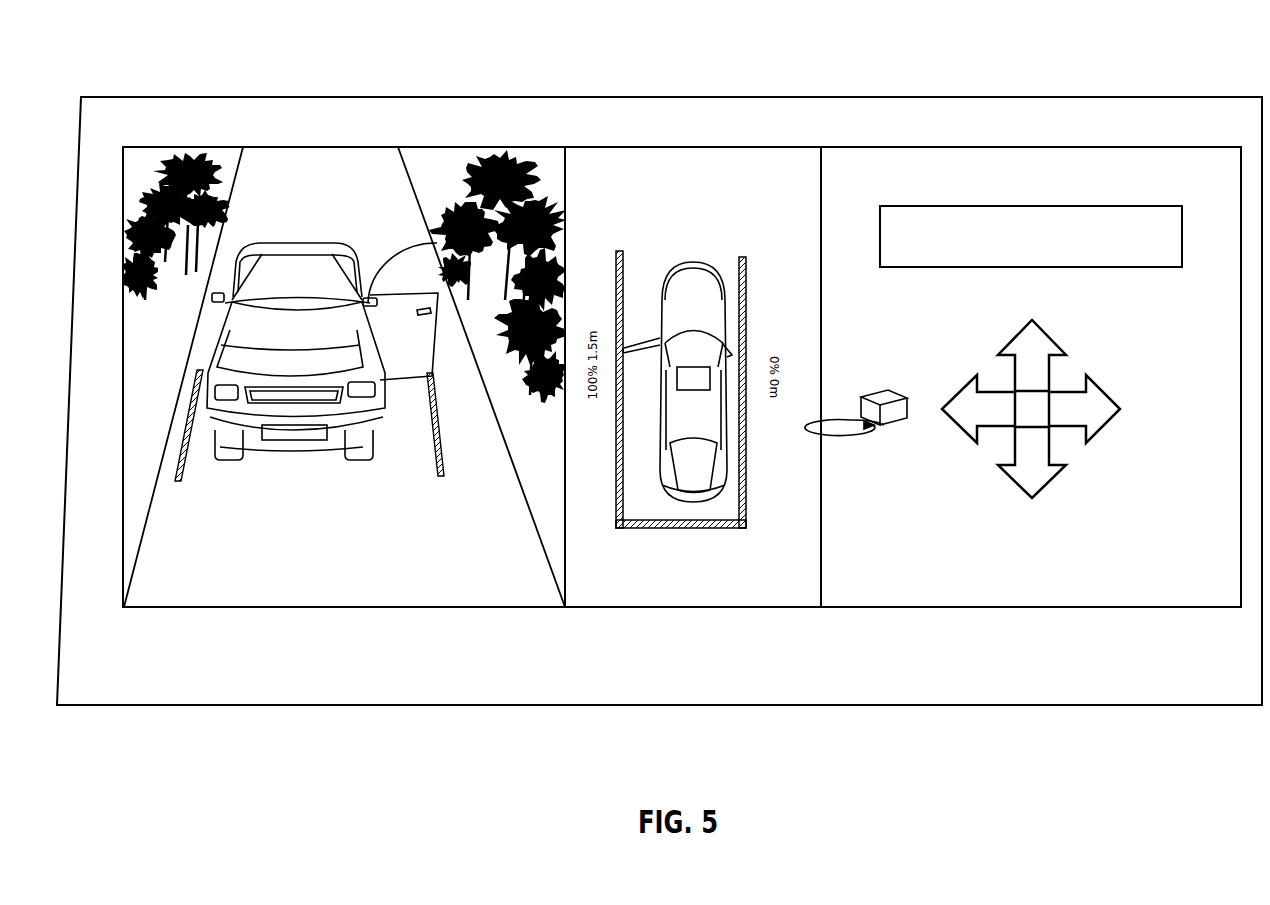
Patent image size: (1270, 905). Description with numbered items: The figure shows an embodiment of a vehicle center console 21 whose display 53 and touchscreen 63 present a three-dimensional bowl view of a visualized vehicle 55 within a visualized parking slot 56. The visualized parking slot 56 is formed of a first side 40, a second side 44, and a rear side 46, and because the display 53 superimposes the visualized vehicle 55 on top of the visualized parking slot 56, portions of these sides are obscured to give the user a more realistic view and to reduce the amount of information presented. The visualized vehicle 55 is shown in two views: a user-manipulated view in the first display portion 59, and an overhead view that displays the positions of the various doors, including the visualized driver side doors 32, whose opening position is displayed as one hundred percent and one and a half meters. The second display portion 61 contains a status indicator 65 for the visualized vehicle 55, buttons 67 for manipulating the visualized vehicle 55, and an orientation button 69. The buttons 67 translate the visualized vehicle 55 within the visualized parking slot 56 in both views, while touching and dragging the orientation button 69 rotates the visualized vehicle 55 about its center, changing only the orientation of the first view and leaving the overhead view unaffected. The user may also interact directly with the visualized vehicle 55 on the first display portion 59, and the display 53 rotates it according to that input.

The center console 21 is at (98, 66).
The touchscreen 63 is at (1064, 128).
The display 53 is at (118, 467).
The first display portion 59 is at (224, 620).
The second display portion 61 is at (1066, 619).
The visualized vehicle 55 is at (284, 252).
The visualized driver side doors 32 is at (413, 275).
The first side 40 is at (178, 484).
The second side 44 is at (440, 478).
The rear side 46 is at (678, 530).
The visualized parking slot 56 is at (742, 290).
The status indicator 65 is at (938, 268).
The buttons 67 is at (1098, 470).
The orientation button 69 is at (890, 432).